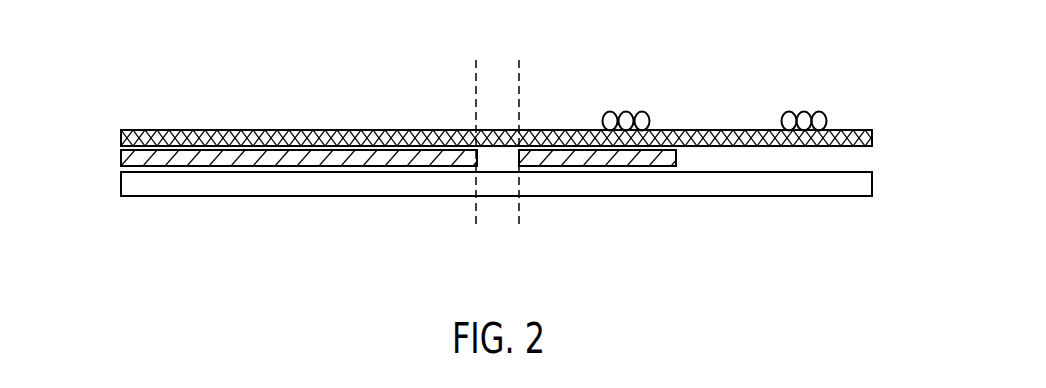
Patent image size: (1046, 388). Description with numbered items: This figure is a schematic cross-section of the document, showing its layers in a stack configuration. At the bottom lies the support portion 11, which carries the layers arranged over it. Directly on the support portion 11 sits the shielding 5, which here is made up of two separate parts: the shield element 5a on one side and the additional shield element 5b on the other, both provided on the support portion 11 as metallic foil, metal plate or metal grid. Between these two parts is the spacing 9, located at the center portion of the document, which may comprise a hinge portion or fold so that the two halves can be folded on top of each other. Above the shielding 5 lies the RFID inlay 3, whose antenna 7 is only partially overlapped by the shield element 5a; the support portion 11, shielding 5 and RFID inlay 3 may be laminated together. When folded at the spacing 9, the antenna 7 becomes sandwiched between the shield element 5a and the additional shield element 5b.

The RFID inlay 3 is at (873, 138).
The shielding 5 is at (378, 198).
The shield element 5a is at (676, 155).
The additional shield element 5b is at (121, 156).
The antenna 7 is at (664, 110).
The spacing 9 is at (519, 64).
The support portion 11 is at (873, 184).